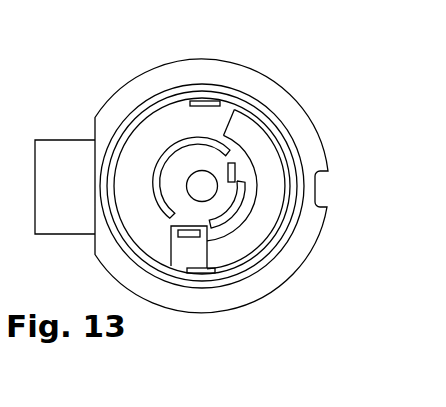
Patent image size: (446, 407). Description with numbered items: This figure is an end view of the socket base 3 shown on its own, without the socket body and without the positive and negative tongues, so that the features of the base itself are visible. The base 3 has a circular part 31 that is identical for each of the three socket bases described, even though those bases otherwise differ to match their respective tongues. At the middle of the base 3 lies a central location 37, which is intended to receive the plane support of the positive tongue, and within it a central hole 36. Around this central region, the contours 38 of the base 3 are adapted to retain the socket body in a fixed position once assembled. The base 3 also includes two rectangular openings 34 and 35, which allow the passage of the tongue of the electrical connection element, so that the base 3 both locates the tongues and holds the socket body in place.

The base 3 is at (110, 112).
The circular part 31 is at (238, 78).
The rectangular opening 34 is at (193, 240).
The rectangular opening 35 is at (237, 170).
The central hole 36 is at (189, 188).
The central location 37 is at (193, 160).
The contours 38 is at (240, 178).